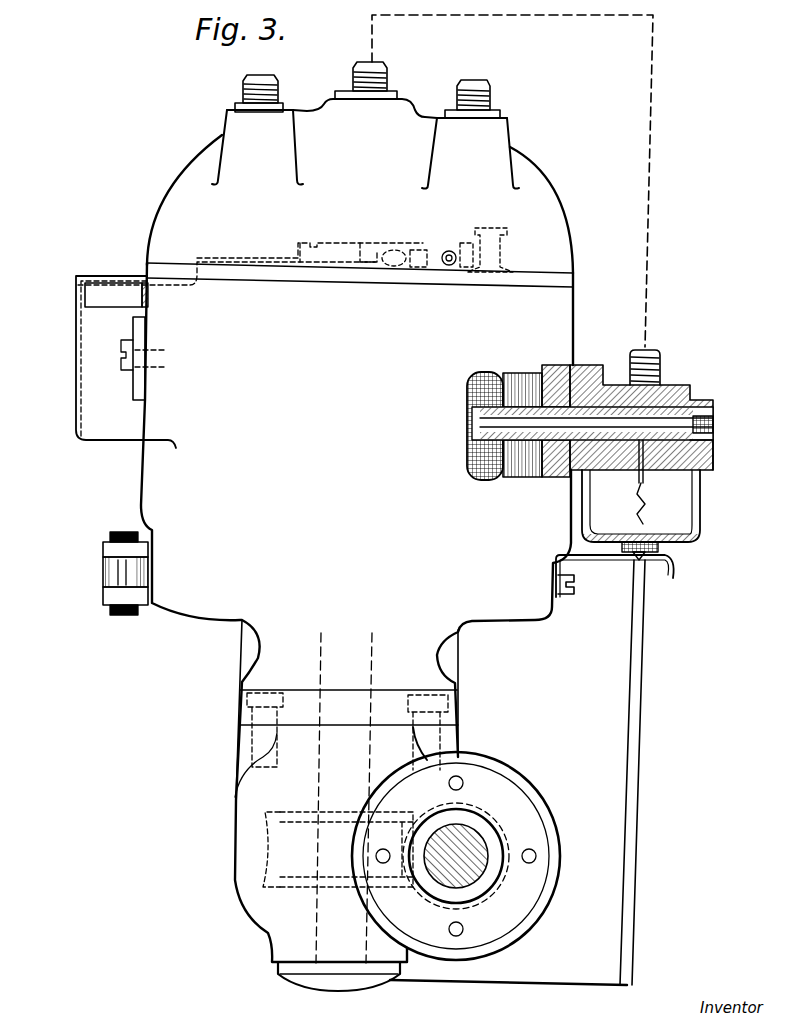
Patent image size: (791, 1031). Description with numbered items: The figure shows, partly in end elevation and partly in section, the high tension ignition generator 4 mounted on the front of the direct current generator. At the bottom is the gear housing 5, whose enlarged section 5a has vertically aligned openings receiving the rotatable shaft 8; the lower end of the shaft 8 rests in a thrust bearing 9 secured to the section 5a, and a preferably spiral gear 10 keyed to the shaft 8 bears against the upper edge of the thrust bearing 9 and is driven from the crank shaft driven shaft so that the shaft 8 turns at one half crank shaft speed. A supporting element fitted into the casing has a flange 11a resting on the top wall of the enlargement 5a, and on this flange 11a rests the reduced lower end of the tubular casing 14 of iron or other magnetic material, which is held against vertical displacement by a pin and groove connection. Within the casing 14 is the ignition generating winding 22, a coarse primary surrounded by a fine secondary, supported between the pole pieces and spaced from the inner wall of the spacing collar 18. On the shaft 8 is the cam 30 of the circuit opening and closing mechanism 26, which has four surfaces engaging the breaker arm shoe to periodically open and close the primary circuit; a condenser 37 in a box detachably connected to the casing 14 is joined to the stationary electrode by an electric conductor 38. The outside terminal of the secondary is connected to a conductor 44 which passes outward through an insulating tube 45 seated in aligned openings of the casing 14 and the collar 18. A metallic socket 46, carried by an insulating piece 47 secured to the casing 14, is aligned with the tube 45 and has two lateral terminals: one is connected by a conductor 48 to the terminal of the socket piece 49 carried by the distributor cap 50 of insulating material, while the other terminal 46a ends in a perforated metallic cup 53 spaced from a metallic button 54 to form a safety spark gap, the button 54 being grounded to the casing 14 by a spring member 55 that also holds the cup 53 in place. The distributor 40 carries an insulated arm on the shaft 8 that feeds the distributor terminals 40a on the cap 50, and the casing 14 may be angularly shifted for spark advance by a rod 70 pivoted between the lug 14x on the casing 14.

The high tension ignition generator 4 is at (357, 612).
The gear housing 5 is at (212, 898).
The enlarged section of gear casing 5a is at (236, 849).
The rotatable shaft 8 is at (327, 908).
The thrust bearing 9 is at (307, 978).
The gear 10 is at (338, 837).
The flange 11a is at (346, 743).
The tubular casing 14 is at (575, 363).
The lug 14x is at (143, 600).
The spacing collar 18 is at (560, 474).
The ignition generating winding 22 is at (474, 442).
The circuit opening and closing mechanism 26 is at (446, 251).
The cam 30 is at (372, 246).
The condenser 37 is at (105, 290).
The electric conductor 38 is at (237, 258).
The distributor 40 is at (183, 172).
The distributor terminals 40a is at (505, 97).
The conductor 44 is at (683, 402).
The insulating tube 45 is at (527, 371).
The metallic socket 46 is at (713, 458).
The terminal arm 46a is at (644, 482).
The insulating piece 47 is at (715, 440).
The conductor 48 is at (497, 16).
The socket piece 49 is at (348, 97).
The distributor cap 50 is at (224, 142).
The perforated metallic cup 53 is at (698, 534).
The metallic button 54 is at (648, 531).
The spring member 55 is at (604, 560).
The rod 70 is at (107, 574).